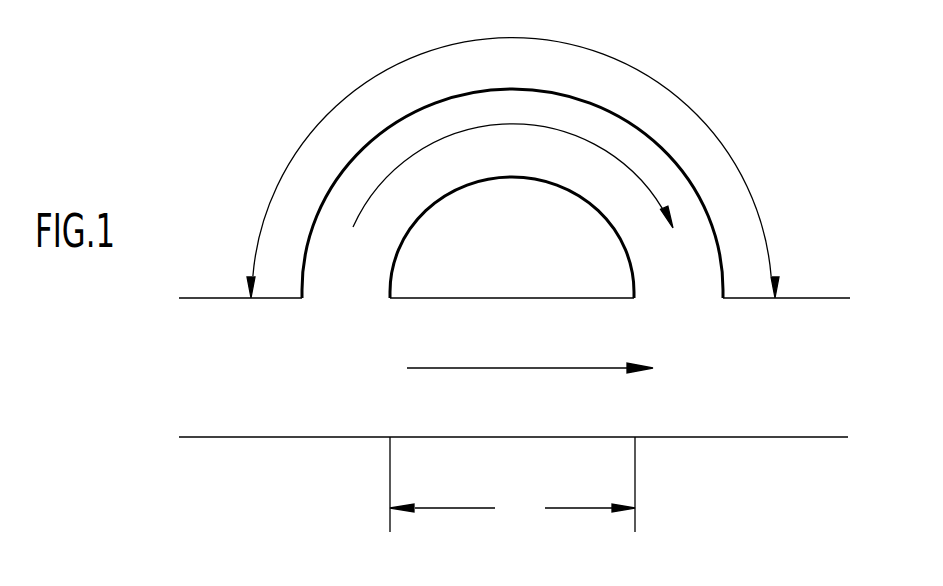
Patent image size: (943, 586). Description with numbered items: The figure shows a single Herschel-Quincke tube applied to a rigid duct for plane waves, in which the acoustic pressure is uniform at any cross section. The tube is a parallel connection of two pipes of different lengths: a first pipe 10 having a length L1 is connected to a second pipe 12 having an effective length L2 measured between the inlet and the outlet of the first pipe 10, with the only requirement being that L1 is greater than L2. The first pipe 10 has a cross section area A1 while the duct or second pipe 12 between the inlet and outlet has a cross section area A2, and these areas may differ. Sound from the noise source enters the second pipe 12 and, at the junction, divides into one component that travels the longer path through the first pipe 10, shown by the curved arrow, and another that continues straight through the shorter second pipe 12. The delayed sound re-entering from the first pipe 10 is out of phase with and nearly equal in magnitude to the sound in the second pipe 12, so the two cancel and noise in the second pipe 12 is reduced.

The first pipe 10 is at (693, 190).
The second pipe 12 is at (753, 410).
The length of first pipe L1 is at (513, 149).
The effective length of second pipe L2 is at (512, 485).
The cross section area of tube A1 is at (508, 370).
The cross section area of enclosure A2 is at (504, 194).